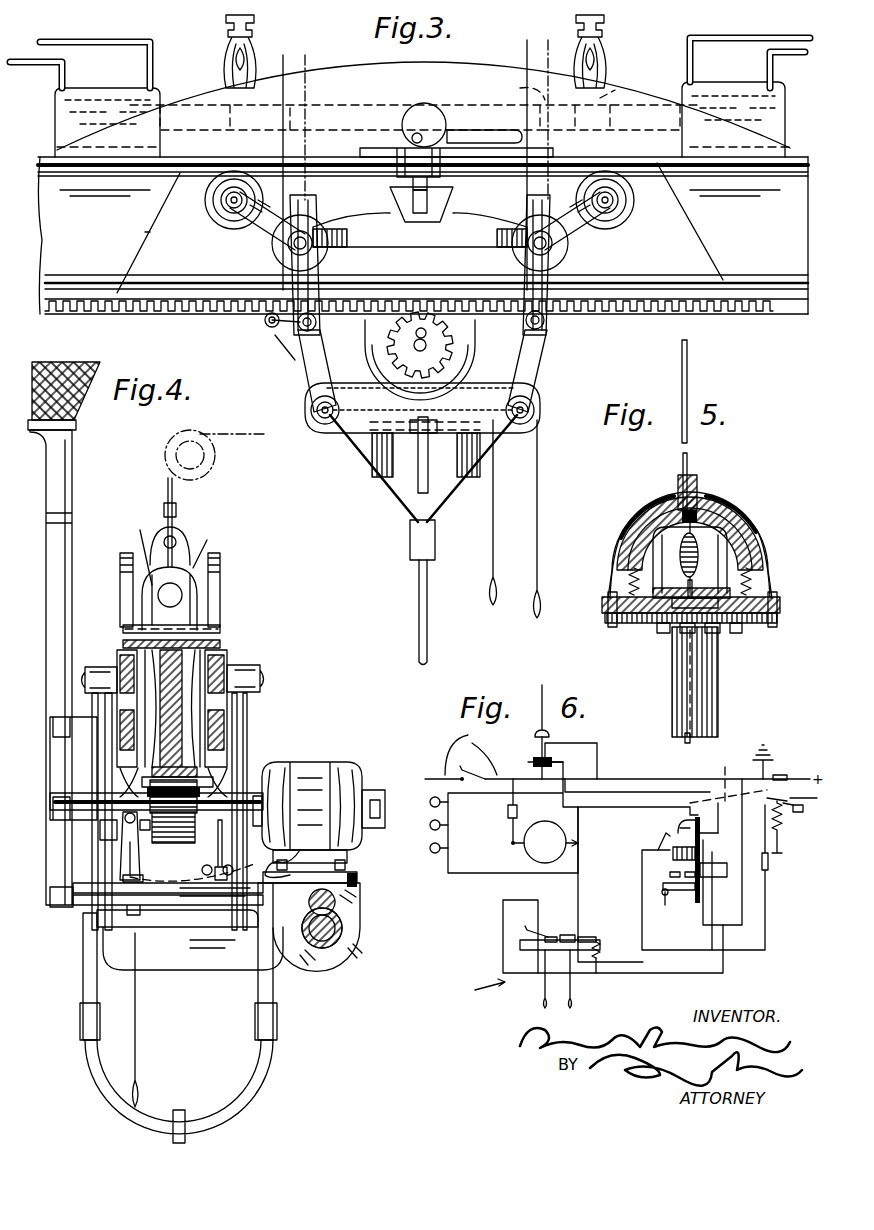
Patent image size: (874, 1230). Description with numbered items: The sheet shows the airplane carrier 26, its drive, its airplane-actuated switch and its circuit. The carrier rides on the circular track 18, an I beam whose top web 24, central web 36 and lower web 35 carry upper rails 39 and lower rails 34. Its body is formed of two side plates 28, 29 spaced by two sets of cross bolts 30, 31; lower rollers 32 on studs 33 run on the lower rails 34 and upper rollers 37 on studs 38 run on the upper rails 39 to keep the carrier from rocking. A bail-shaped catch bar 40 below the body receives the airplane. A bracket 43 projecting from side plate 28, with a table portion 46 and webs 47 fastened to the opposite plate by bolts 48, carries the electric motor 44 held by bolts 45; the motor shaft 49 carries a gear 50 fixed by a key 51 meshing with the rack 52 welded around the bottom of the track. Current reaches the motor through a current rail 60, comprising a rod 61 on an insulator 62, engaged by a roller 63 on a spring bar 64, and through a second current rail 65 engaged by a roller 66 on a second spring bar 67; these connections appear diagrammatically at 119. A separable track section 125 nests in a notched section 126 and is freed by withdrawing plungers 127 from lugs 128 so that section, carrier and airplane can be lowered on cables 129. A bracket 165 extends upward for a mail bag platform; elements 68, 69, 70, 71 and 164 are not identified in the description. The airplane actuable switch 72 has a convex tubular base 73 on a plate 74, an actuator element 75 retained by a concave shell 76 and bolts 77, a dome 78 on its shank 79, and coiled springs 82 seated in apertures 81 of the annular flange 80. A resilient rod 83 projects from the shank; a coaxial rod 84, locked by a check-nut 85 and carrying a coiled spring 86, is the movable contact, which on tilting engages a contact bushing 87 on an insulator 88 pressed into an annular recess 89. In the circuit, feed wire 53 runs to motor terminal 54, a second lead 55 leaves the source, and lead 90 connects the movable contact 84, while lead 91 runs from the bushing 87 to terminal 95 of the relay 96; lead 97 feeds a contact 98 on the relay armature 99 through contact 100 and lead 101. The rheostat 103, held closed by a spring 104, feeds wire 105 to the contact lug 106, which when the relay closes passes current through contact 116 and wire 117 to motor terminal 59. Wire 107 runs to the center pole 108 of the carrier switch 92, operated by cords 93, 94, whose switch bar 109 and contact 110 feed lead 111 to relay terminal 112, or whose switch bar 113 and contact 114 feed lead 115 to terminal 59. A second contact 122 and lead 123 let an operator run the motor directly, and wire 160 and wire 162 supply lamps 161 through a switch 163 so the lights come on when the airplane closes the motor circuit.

In FIG. 3, the circular track 18 is at (760, 318).
In FIG. 4, the circular track 18 is at (188, 668).
In FIG. 4, the top web 24 is at (222, 634).
In FIG. 4, the carrier 26 is at (328, 692).
In FIG. 4, the side plate 28 is at (300, 762).
In FIG. 3, the side plate 29 is at (545, 356).
In FIG. 4, the side plate 29 is at (100, 855).
In FIG. 3, the cross bolts 30 is at (548, 322).
In FIG. 4, the cross bolts 30 is at (127, 812).
In FIG. 3, the cross bolts 31 is at (535, 407).
In FIG. 4, the cross bolts 31 is at (175, 905).
In FIG. 3, the lower rollers 32 is at (700, 236).
In FIG. 4, the lower rollers 32 is at (210, 745).
In FIG. 3, the studs 33 is at (553, 243).
In FIG. 4, the studs 33 is at (48, 720).
In FIG. 4, the lower rails 34 is at (250, 765).
In FIG. 3, the lower web 35 is at (662, 292).
In FIG. 4, the lower web 35 is at (215, 785).
In FIG. 4, the central web 36 is at (232, 690).
In FIG. 3, the upper rollers 37 is at (634, 200).
In FIG. 4, the upper rollers 37 is at (230, 662).
In FIG. 3, the studs 38 is at (617, 212).
In FIG. 4, the studs 38 is at (232, 667).
In FIG. 3, the upper rails 39 is at (668, 168).
In FIG. 4, the upper rails 39 is at (228, 644).
In FIG. 3, the catch bar 40 is at (432, 662).
In FIG. 4, the catch bar 40 is at (292, 1064).
In FIG. 3, the bracket 43 is at (353, 407).
In FIG. 4, the bracket 43 is at (282, 955).
In FIG. 3, the electric motor 44 is at (470, 342).
In FIG. 4, the electric motor 44 is at (360, 773).
In FIG. 6, the electric motor 44 is at (545, 842).
In FIG. 4, the bolts 45 is at (358, 868).
In FIG. 4, the table portion 46 is at (357, 882).
In FIG. 4, the webs 47 is at (235, 965).
In FIG. 4, the bolts 48 is at (133, 915).
In FIG. 4, the motor shaft 49 is at (385, 803).
In FIG. 3, the gear 50 is at (395, 333).
In FIG. 4, the gear 50 is at (172, 845).
In FIG. 3, the key 51 is at (414, 338).
In FIG. 3, the rack 52 is at (200, 312).
In FIG. 6, the rack 52 is at (804, 814).
In FIG. 4, the feed wire 53 is at (208, 538).
In FIG. 6, the feed wire 53 is at (780, 775).
In FIG. 6, the motor terminal 54 is at (510, 845).
In FIG. 4, the second lead 55 is at (138, 530).
In FIG. 6, the second motor terminal 59 is at (580, 843).
In FIG. 4, the current rail 60 is at (228, 780).
In FIG. 4, the current-carrying rod 61 is at (218, 845).
In FIG. 4, the insulator 62 is at (140, 842).
In FIG. 4, the roller 63 is at (262, 808).
In FIG. 3, the spring bar 64 is at (290, 340).
In FIG. 4, the second current rail 65 is at (125, 785).
In FIG. 3, the roller 66 is at (268, 325).
In FIG. 4, the roller 66 is at (130, 790).
In FIG. 4, the second spring bar 67 is at (130, 842).
In FIG. 4, the chain 68 is at (175, 878).
In FIG. 4, the motor leads 69 is at (310, 850).
In FIG. 4, the gear wheel 70 is at (343, 932).
In FIG. 4, the bracket 71 is at (337, 948).
In FIG. 5, the airplane actuable switch 72 is at (603, 520).
In FIG. 6, the airplane actuable switch 72 is at (562, 734).
In FIG. 5, the convex tubular base 73 is at (757, 613).
In FIG. 5, the plate 74 is at (740, 613).
In FIG. 5, the actuator element 75 is at (757, 550).
In FIG. 5, the concave shell 76 is at (753, 573).
In FIG. 5, the bolts 77 is at (612, 627).
In FIG. 5, the dome 78 is at (707, 523).
In FIG. 5, the shank 79 is at (698, 484).
In FIG. 5, the annular flange 80 is at (757, 598).
In FIG. 5, the apertures 81 is at (692, 592).
In FIG. 5, the coiled springs 82 is at (748, 577).
In FIG. 5, the resilient rod 83 is at (700, 452).
In FIG. 5, the movable contact member 84 is at (699, 560).
In FIG. 6, the movable contact member 84 is at (540, 745).
In FIG. 5, the check-nut 85 is at (745, 520).
In FIG. 5, the coiled spring 86 is at (750, 533).
In FIG. 5, the contact bushing 87 is at (680, 618).
In FIG. 6, the contact bushing 87 is at (528, 762).
In FIG. 5, the insulator 88 is at (665, 610).
In FIG. 5, the annular recess 89 is at (718, 640).
In FIG. 5, the lead 90 is at (690, 735).
In FIG. 6, the lead 90 is at (538, 781).
In FIG. 5, the lead 91 is at (700, 735).
In FIG. 6, the lead 91 is at (628, 790).
In FIG. 6, the two-way switch 92 is at (478, 989).
In FIG. 3, the extension cord 93 is at (492, 550).
In FIG. 4, the extension cord 93 is at (138, 1052).
In FIG. 6, the extension cord 93 is at (545, 998).
In FIG. 3, the extension cord 94 is at (539, 542).
In FIG. 6, the extension cord 94 is at (573, 1000).
In FIG. 6, the relay terminal 95 is at (712, 838).
In FIG. 6, the relay 96 is at (628, 878).
In FIG. 6, the lead 97 is at (742, 905).
In FIG. 6, the contact 98 is at (682, 898).
In FIG. 6, the relay armature 99 is at (663, 885).
In FIG. 6, the relay contact 100 is at (698, 877).
In FIG. 6, the lead 101 is at (712, 868).
In FIG. 6, the rheostat 103 is at (791, 833).
In FIG. 6, the spring 104 is at (782, 825).
In FIG. 6, the wire 105 is at (768, 885).
In FIG. 6, the contact lug 106 is at (657, 840).
In FIG. 6, the wire 107 is at (655, 975).
In FIG. 6, the center pole 108 is at (552, 935).
In FIG. 6, the switch bar 109 is at (570, 935).
In FIG. 6, the contact 110 is at (585, 935).
In FIG. 6, the lead 111 is at (615, 960).
In FIG. 6, the relay terminal 112 is at (697, 852).
In FIG. 6, the switch bar 113 is at (530, 930).
In FIG. 6, the contact 114 is at (520, 940).
In FIG. 6, the lead 115 is at (503, 953).
In FIG. 6, the relay switch contact 116 is at (682, 832).
In FIG. 6, the wire 117 is at (612, 808).
In FIG. 6, the feed connection 119 is at (600, 940).
In FIG. 6, the second contact 122 is at (775, 798).
In FIG. 6, the extra lead 123 is at (728, 779).
In FIG. 3, the separable track section 125 is at (166, 231).
In FIG. 3, the notched section 126 is at (702, 222).
In FIG. 3, the plungers 127 is at (613, 100).
In FIG. 3, the lugs 128 is at (518, 78).
In FIG. 3, the cables 129 is at (604, 27).
In FIG. 6, the wire 160 is at (460, 873).
In FIG. 6, the lamps 161 is at (452, 848).
In FIG. 6, the wire 162 is at (476, 752).
In FIG. 6, the switch 163 is at (470, 765).
In FIG. 4, the pedal 164 is at (70, 358).
In FIG. 3, the bracket 165 is at (300, 67).
In FIG. 4, the bracket 165 is at (60, 460).